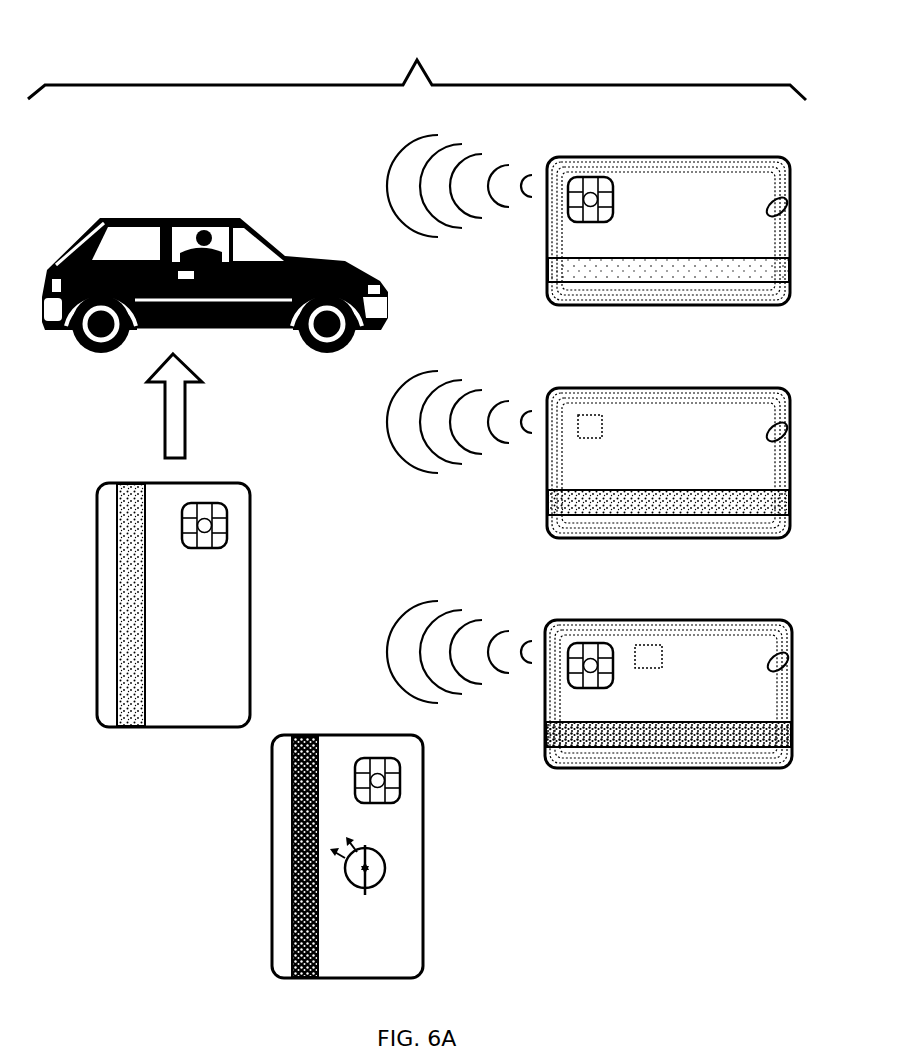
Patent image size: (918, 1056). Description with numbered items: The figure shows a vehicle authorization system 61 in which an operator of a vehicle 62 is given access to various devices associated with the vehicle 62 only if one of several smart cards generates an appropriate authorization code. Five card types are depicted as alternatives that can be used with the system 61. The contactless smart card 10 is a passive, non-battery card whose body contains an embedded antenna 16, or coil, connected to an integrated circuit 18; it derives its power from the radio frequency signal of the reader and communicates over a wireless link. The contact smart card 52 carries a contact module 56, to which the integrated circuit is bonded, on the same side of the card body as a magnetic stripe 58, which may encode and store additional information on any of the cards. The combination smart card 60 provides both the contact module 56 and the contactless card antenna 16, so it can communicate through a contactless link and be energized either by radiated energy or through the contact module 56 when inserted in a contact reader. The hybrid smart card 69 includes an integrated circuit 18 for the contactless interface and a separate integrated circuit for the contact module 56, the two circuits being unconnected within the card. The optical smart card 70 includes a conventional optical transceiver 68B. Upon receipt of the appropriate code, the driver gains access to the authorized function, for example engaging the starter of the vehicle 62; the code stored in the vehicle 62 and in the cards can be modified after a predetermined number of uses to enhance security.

The contactless smart card 10 is at (697, 388).
The antenna 16 is at (785, 200).
The integrated circuit 18 is at (595, 415).
The contact smart card 52 is at (250, 567).
The contact module 56 is at (598, 180).
The magnetic stripe 58 is at (752, 277).
The combination smart card 60 is at (700, 157).
The vehicle authorization system 61 is at (447, 62).
The vehicle 62 is at (197, 212).
The hybrid smart card 69 is at (697, 620).
The optical smart card 70 is at (424, 778).
The optical transceiver 68B is at (385, 857).